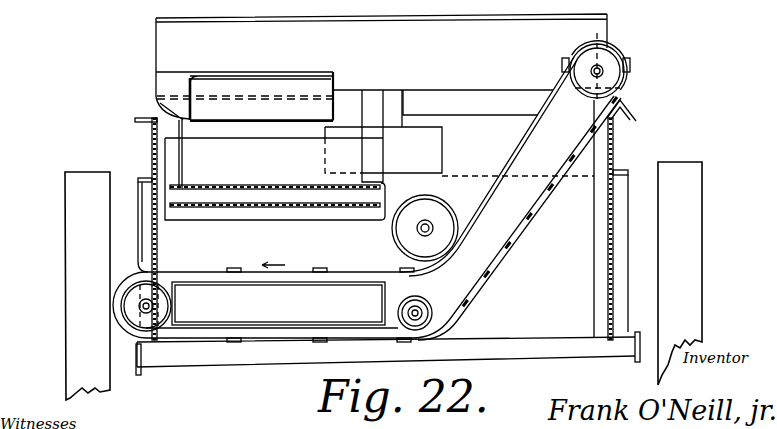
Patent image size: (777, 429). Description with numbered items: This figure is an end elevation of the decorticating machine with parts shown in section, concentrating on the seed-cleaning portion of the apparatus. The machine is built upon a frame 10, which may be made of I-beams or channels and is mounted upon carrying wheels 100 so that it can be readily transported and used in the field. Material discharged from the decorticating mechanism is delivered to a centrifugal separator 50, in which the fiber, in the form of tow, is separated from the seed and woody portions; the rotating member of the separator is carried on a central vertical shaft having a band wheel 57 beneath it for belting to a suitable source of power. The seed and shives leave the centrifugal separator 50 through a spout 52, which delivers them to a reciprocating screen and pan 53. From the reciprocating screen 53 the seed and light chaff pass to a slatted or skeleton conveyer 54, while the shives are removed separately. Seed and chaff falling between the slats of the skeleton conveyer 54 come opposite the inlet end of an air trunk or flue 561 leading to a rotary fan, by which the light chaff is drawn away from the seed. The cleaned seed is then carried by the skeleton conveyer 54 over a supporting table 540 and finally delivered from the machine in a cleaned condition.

The frame 10 is at (152, 150).
The centrifugal separator 50 is at (381, 67).
The spout 52 is at (270, 61).
The reciprocating screen and pan 53 is at (250, 209).
The skeleton conveyer 54 is at (300, 333).
The band wheel 57 is at (427, 152).
The carrying wheels 100 is at (68, 298).
The supporting table 540 is at (182, 347).
The air trunk 561 is at (278, 303).